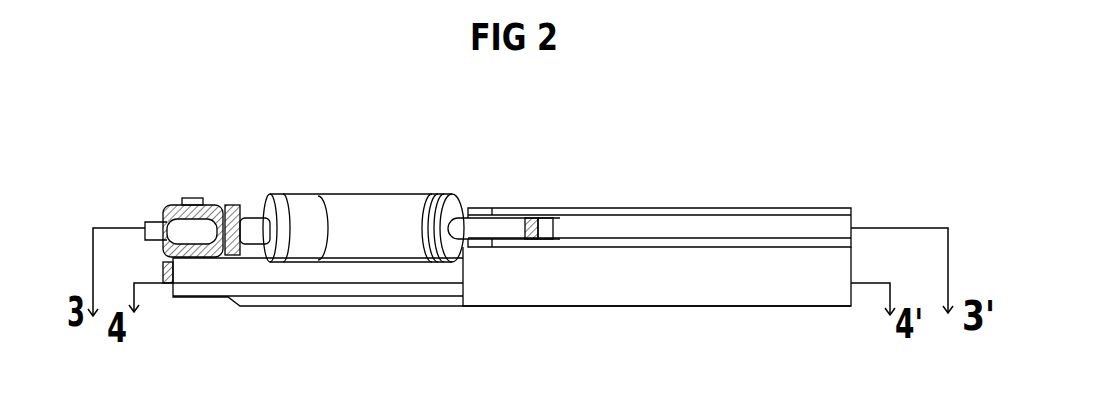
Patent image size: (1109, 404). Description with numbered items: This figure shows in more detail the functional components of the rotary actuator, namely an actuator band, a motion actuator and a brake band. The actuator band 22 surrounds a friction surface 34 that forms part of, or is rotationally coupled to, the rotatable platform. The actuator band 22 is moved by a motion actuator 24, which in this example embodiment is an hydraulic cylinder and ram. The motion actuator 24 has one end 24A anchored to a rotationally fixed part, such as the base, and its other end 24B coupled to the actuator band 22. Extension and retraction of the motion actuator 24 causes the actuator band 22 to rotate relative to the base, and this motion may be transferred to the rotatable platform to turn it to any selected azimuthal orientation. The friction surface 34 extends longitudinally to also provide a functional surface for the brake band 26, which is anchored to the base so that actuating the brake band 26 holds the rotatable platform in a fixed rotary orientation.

The actuator band 22 is at (858, 213).
The motion actuator 24 is at (377, 197).
The one end of the motion actuator 24A is at (492, 212).
The other end of the motion actuator 24B is at (213, 198).
The brake band 26 is at (330, 282).
The friction surface 34 is at (663, 285).